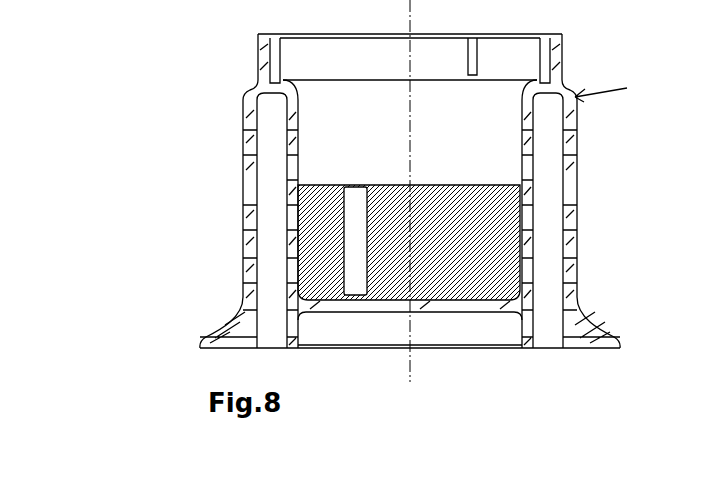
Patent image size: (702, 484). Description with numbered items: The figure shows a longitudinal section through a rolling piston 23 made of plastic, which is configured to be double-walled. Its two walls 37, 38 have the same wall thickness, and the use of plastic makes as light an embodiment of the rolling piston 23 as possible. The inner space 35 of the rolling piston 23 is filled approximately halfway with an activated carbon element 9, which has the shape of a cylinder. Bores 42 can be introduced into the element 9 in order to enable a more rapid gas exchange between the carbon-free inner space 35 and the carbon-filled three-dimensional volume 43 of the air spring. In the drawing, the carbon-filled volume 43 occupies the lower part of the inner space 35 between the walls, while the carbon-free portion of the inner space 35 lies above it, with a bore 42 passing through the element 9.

The activated carbon element 9 is at (497, 200).
The rolling piston 23 is at (617, 149).
The inner space 35 is at (452, 163).
The wall 37 is at (290, 108).
The wall 38 is at (253, 172).
The bores 42 is at (353, 186).
The carbon-filled three-dimensional volume 43 is at (470, 256).